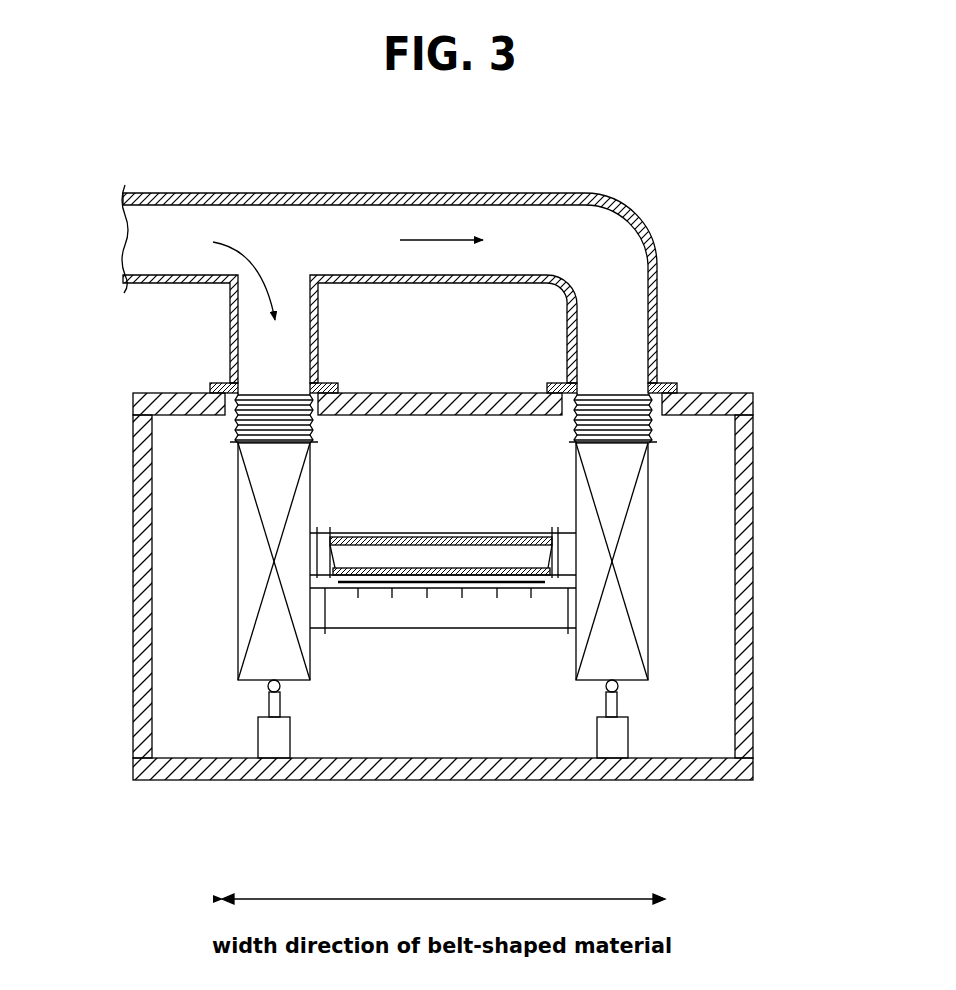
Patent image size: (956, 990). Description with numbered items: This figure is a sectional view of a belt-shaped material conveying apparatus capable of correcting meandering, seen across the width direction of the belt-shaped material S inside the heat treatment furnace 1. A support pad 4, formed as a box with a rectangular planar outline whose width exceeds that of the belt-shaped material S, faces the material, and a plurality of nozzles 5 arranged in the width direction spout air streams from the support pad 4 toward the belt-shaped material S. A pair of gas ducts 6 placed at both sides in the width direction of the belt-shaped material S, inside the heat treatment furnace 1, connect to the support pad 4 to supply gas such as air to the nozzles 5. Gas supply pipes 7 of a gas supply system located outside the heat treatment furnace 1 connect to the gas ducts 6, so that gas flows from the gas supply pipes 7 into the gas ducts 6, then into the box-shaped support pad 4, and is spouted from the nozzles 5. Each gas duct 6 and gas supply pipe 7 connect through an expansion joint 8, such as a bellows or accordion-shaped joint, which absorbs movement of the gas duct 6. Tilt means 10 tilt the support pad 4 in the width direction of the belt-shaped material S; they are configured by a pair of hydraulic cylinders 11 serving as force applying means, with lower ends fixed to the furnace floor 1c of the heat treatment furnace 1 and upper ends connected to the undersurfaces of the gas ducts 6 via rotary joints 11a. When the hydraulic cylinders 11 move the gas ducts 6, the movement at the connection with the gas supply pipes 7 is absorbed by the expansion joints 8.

The heat treatment furnace 1 is at (792, 206).
The furnace floor 1c is at (468, 758).
The support pad 4 is at (378, 537).
The nozzle 5 is at (528, 568).
The belt-shaped material S is at (441, 580).
The gas duct 6 is at (237, 576).
The gas supply pipe 7 is at (230, 341).
The expansion joint 8 is at (280, 400).
The tilt means 10 is at (180, 721).
The hydraulic cylinder 11 is at (265, 740).
The rotary joint 11a is at (266, 688).